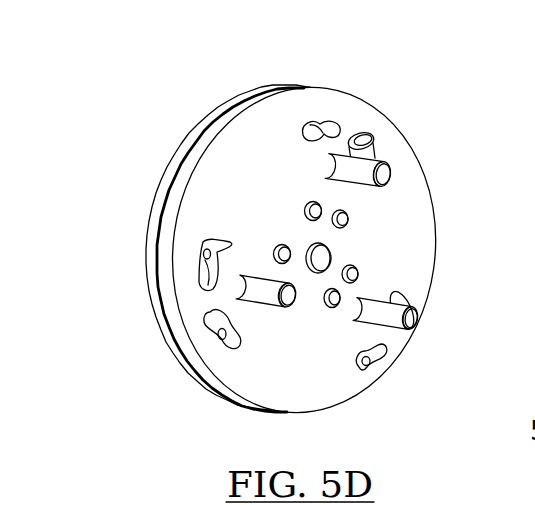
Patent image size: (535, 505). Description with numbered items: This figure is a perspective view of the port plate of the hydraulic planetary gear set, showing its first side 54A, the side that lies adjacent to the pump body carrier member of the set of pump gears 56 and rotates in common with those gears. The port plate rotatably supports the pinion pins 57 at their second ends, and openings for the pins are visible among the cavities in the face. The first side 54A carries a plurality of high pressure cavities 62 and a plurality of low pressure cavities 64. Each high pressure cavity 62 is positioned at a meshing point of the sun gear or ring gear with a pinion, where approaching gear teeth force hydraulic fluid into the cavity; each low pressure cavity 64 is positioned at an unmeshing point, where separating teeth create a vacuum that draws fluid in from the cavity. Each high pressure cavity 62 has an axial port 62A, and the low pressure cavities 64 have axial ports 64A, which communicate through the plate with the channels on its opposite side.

The set of pump gears 56 is at (141, 73).
The first side 54A is at (409, 217).
The pinion pins 57 is at (348, 168).
The high pressure cavities 62 is at (325, 129).
The axial port 62A is at (223, 341).
The low pressure cavities 64 is at (305, 208).
The axial ports 64A is at (229, 243).